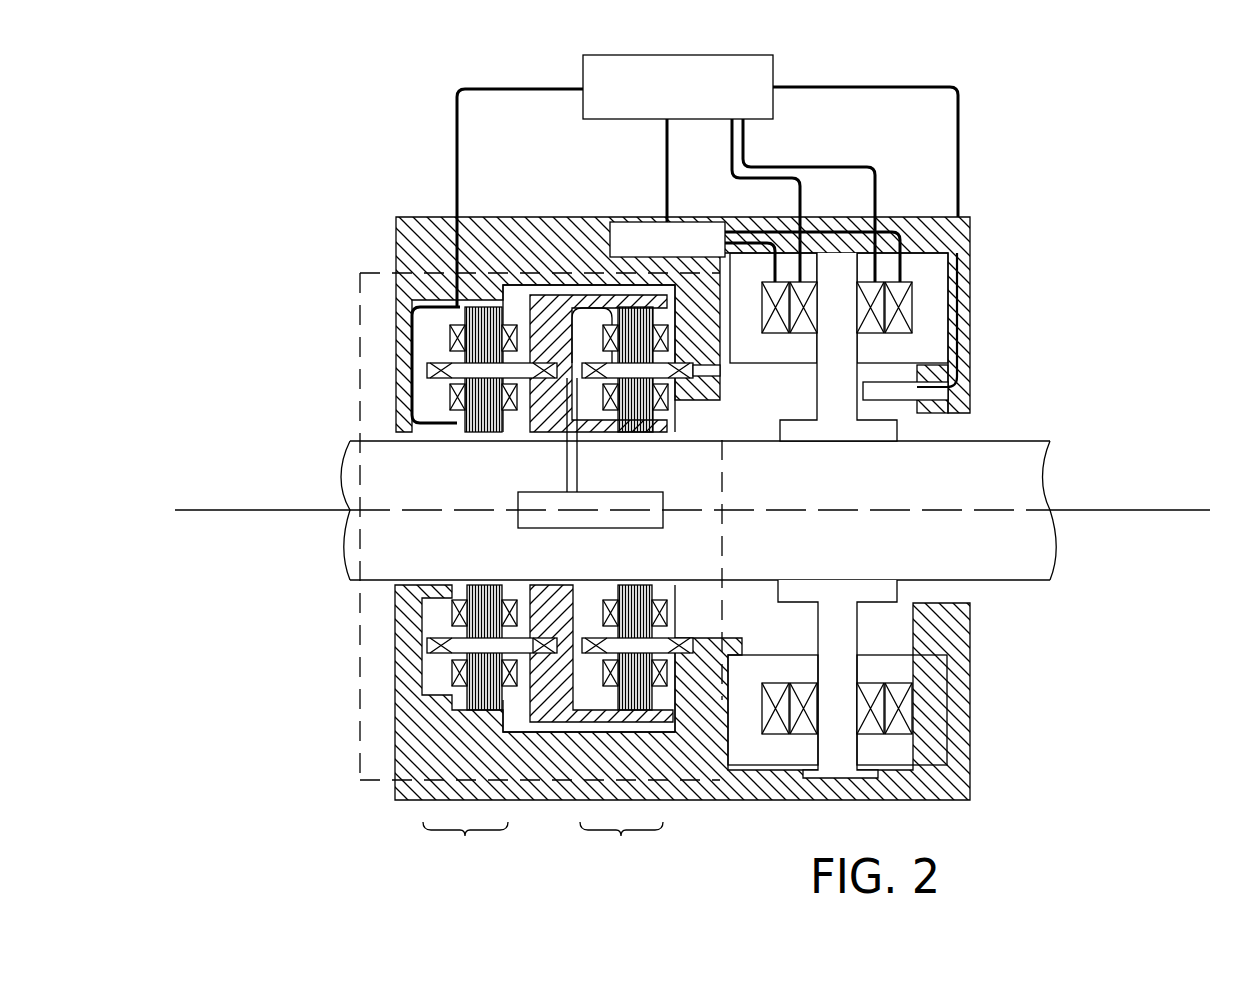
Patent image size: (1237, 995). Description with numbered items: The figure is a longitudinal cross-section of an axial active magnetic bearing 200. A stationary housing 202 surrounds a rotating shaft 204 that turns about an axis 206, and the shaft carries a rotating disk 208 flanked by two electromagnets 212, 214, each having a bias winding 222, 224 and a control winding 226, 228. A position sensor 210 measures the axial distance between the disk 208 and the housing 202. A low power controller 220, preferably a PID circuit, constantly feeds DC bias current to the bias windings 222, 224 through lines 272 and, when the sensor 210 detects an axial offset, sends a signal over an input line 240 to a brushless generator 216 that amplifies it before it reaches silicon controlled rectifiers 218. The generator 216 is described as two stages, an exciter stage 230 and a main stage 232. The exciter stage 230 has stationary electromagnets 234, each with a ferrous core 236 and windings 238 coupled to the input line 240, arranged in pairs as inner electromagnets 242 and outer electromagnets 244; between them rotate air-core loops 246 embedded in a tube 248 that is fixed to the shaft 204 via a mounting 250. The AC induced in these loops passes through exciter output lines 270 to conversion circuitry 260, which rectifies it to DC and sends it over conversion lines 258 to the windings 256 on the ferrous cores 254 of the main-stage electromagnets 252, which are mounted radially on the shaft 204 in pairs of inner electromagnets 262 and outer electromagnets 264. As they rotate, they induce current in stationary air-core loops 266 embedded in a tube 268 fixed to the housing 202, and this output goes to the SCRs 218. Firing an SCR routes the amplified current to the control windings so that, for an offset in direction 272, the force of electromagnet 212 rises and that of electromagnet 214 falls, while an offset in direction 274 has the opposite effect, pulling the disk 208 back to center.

The axial active magnetic bearing 200 is at (1010, 115).
The stationary housing 202 is at (968, 262).
The rotating shaft 204 is at (1030, 441).
The axis 206 is at (1125, 511).
The rotating disk 208 is at (818, 625).
The position sensor 210 is at (903, 407).
The electromagnet 212 is at (760, 367).
The electromagnet 214 is at (892, 652).
The brushless generator 216 is at (359, 692).
The silicon controlled rectifiers (SCRs) 218 is at (596, 286).
The low power controller 220 is at (675, 55).
The bias winding 222 is at (812, 337).
The bias winding 224 is at (877, 338).
The control winding 226 is at (755, 297).
The control winding 228 is at (913, 310).
The exciter stage 230 is at (465, 846).
The main stage 232 is at (621, 846).
The stationary electromagnet 234 is at (478, 595).
The ferrous core 236 is at (487, 310).
The windings 238 is at (518, 307).
The input line 240 is at (481, 88).
The inner electromagnet 242 is at (495, 596).
The outer electromagnet 244 is at (508, 705).
The air-core loop 246 is at (427, 645).
The tube 248 is at (553, 615).
The mounting 250 is at (597, 590).
The electromagnet 252 is at (660, 588).
The ferrous core 254 is at (630, 300).
The windings 256 is at (680, 423).
The conversion lines 258 is at (580, 477).
The conversion circuitry 260 is at (518, 498).
The inner electromagnet 262 is at (662, 622).
The outer electromagnet 264 is at (580, 690).
The air-core loop 266 is at (745, 637).
The tube / output line 268 is at (555, 392).
The exciter output lines 270 is at (565, 459).
The lines / direction 272 is at (777, 178).
The direction 274 is at (237, 536).